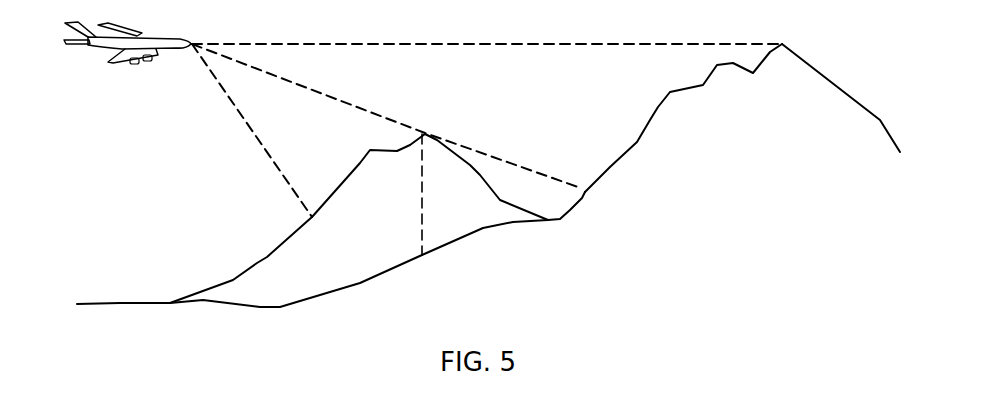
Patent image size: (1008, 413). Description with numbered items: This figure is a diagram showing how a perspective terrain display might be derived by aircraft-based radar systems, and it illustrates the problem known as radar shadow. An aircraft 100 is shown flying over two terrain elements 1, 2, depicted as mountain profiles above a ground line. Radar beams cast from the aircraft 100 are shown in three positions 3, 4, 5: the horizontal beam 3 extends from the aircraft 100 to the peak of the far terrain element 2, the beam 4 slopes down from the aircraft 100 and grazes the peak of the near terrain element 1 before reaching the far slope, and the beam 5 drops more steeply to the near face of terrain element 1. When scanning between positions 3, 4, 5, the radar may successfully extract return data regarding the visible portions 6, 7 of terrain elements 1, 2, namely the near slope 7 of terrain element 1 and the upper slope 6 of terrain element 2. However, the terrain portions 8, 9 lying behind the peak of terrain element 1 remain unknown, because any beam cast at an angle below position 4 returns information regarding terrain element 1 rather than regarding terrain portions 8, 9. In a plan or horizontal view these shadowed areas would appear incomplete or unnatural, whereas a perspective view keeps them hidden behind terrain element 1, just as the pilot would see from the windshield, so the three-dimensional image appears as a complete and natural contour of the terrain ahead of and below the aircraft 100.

The aircraft 100 is at (172, 40).
The radar beam position 3 is at (490, 42).
The radar beam position 5 is at (251, 141).
The radar beam position 4 is at (506, 162).
The visible portion of terrain element 7 is at (357, 165).
The terrain element 1 is at (376, 213).
The terrain portion 9 is at (452, 214).
The terrain portion 8 is at (528, 199).
The visible portion of terrain element 6 is at (650, 119).
The terrain element 2 is at (735, 138).